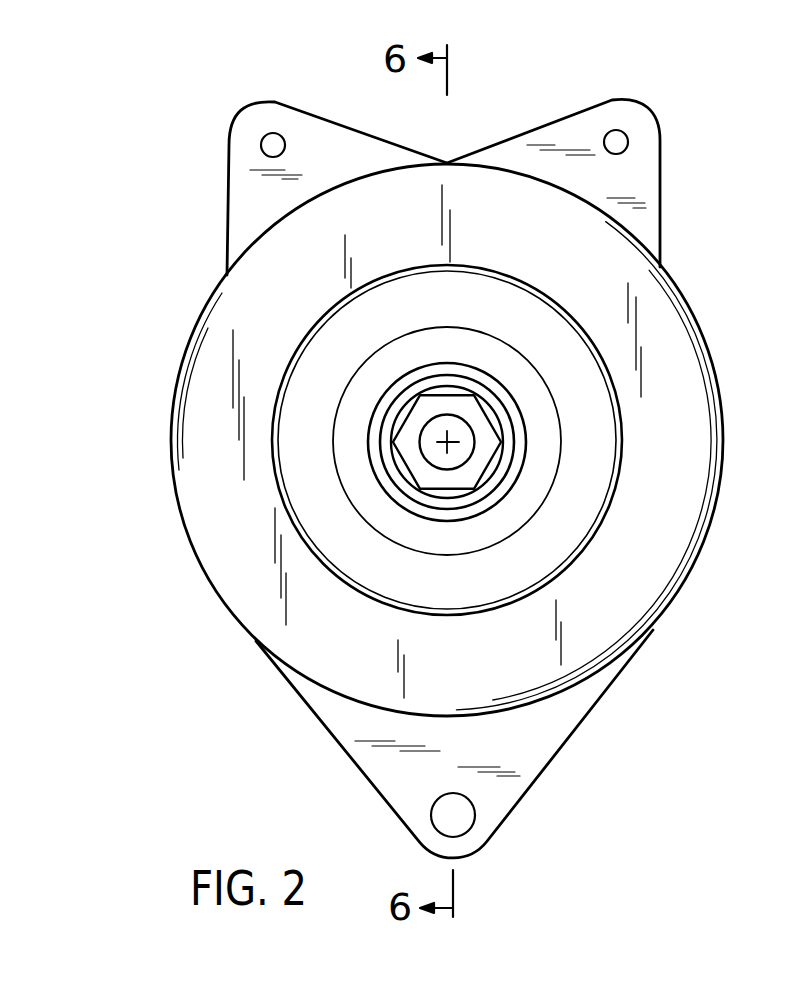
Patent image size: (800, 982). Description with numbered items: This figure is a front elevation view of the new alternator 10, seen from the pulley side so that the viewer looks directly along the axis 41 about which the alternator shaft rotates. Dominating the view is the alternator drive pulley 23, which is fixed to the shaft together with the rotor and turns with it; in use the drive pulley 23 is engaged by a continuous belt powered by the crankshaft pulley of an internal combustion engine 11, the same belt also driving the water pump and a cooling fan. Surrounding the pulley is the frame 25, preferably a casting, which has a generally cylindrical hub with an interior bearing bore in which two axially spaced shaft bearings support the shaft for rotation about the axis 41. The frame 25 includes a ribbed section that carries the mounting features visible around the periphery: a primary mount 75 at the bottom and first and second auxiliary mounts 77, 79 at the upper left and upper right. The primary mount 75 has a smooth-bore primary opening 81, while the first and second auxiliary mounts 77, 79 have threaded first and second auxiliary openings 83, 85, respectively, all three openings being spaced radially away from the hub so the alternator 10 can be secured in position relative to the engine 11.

The alternator 10 is at (256, 96).
The internal combustion engine 11 is at (488, 447).
The alternator drive pulley 23 is at (626, 437).
The frame 25 is at (487, 459).
The axis 41 is at (447, 442).
The primary mount 75 is at (496, 833).
The first auxiliary mount 77 is at (270, 102).
The second auxiliary mount 79 is at (647, 108).
The smooth-bore primary opening 81 is at (448, 812).
The first auxiliary opening 83 is at (283, 143).
The second auxiliary opening 85 is at (611, 131).